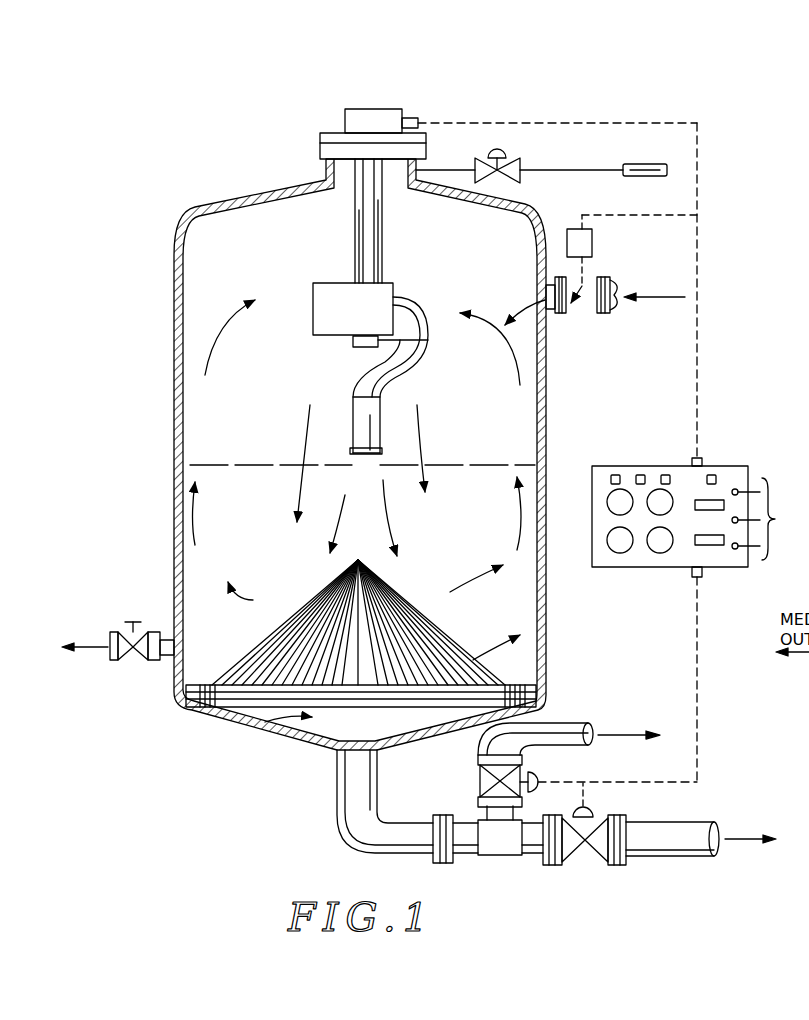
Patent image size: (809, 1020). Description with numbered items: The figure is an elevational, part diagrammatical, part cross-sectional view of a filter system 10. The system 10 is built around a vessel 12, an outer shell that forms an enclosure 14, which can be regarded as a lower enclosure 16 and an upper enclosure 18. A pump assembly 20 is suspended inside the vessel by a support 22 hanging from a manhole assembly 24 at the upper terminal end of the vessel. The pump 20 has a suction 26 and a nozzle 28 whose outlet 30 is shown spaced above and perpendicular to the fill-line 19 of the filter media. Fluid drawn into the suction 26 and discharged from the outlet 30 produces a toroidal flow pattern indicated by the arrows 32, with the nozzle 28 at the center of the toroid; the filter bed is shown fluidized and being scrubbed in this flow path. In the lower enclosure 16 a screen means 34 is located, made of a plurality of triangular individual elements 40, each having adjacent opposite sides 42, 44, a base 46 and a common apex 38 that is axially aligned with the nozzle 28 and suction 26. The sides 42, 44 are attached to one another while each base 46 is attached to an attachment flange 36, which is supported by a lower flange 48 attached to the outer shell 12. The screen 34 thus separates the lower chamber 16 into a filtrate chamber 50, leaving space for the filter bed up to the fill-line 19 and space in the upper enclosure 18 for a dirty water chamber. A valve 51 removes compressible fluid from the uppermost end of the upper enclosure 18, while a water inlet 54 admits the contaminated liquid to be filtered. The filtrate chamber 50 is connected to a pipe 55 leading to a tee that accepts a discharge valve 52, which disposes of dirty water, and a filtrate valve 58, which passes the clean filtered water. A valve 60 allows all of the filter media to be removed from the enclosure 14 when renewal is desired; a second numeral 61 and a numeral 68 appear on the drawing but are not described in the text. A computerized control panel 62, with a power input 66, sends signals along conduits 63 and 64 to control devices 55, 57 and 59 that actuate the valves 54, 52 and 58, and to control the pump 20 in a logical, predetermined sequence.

The filter system 10 is at (399, 454).
The vessel 12 is at (545, 495).
The enclosure 14 is at (519, 327).
The lower enclosure 16 is at (201, 655).
The upper enclosure 18 is at (213, 287).
The fill-line 19 is at (510, 465).
The pump assembly 20 is at (338, 279).
The support 22 is at (382, 232).
The manhole assembly 24 is at (332, 133).
The suction 26 is at (350, 343).
The nozzle 28 is at (353, 426).
The outlet 30 is at (382, 453).
The toroidal flow pattern arrows 32 is at (388, 518).
The screen means 34 is at (408, 597).
The attachment flange 36 is at (174, 672).
The apex 38 is at (370, 540).
The individual elements 40 is at (440, 645).
The side 42 is at (362, 612).
The side 44 is at (414, 647).
The base 46 is at (378, 685).
The lower flange 48 is at (210, 712).
The filtrate chamber 50 is at (272, 732).
The vent valve 51 is at (513, 187).
The discharge valve 52 is at (468, 748).
The water inlet 54 is at (614, 316).
The pipe / control device 55 is at (337, 778).
The control device 57 is at (538, 778).
The filtrate valve 58 is at (551, 868).
The control device 59 is at (592, 809).
The media removal valve 60 is at (112, 660).
The media outlet valve 61 is at (135, 622).
The computerized control panel 62 is at (696, 507).
The conduit 63 is at (697, 343).
The conduit 64 is at (695, 612).
The power input 66 is at (766, 519).
The filter cone 68 is at (358, 606).